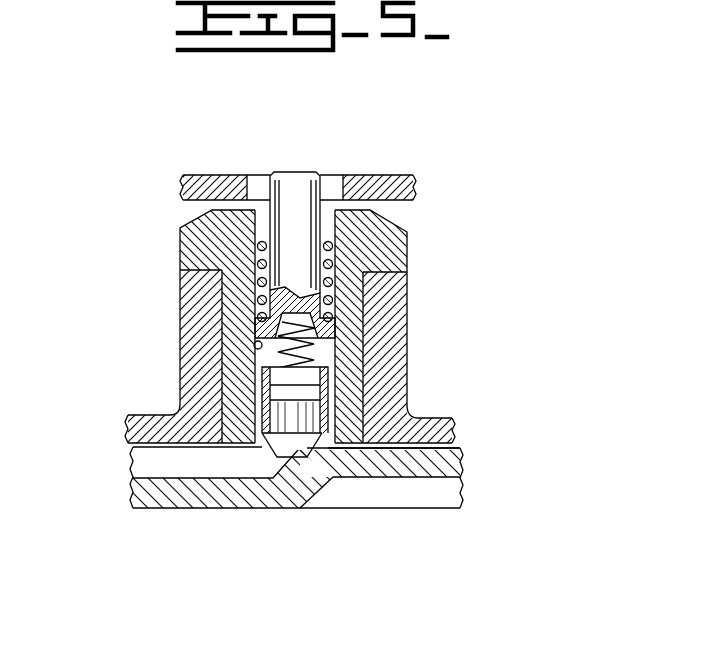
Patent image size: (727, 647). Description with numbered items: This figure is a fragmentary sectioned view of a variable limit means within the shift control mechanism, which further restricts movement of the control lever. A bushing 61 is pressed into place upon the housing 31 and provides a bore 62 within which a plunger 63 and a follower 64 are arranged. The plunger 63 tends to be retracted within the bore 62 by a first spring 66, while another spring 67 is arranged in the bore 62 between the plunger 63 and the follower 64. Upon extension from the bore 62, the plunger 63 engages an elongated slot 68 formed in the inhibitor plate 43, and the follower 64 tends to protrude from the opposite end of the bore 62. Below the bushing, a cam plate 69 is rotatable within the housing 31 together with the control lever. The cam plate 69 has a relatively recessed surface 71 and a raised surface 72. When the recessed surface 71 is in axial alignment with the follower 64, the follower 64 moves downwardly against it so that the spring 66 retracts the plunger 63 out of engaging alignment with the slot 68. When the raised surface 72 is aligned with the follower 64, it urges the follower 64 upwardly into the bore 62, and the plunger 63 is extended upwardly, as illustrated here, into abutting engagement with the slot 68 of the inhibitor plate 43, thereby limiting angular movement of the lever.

The inhibitor plate 43 is at (203, 183).
The elongated slot 68 is at (337, 185).
The bushing 61 is at (393, 234).
The bore 62 is at (257, 343).
The housing 31 is at (397, 308).
The plunger 63 is at (298, 183).
The first spring 66 is at (260, 263).
The spring 67 is at (300, 352).
The follower 64 is at (283, 430).
The raised surface 72 is at (455, 447).
The recessed surface 71 is at (156, 469).
The cam plate 69 is at (338, 491).